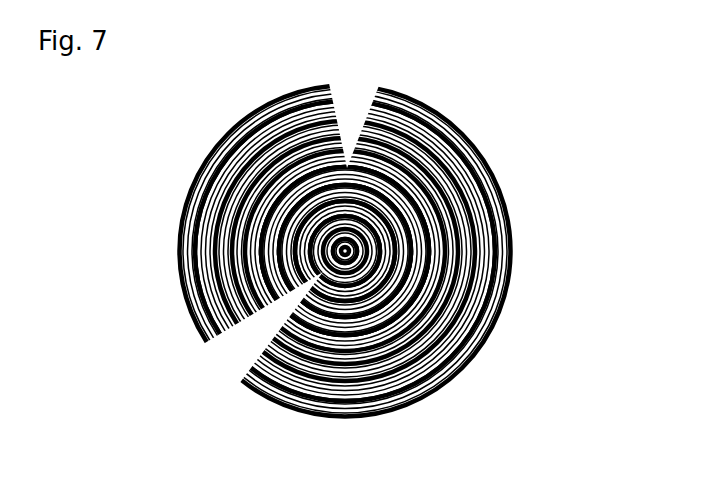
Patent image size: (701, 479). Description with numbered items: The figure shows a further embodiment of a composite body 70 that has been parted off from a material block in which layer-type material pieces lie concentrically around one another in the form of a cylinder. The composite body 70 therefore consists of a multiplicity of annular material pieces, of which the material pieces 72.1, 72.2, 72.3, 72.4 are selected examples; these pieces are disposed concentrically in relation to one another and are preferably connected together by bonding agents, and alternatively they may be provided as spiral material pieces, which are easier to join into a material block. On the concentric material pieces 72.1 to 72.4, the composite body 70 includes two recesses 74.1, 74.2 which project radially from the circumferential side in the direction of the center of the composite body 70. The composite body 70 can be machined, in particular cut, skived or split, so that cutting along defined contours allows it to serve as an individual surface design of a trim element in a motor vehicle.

The composite body 70 is at (498, 112).
The annular material piece 72.1 is at (393, 237).
The annular material piece 72.2 is at (390, 248).
The annular material piece 72.3 is at (383, 260).
The annular material piece 72.4 is at (380, 277).
The recess 74.1 is at (350, 110).
The recess 74.2 is at (255, 337).